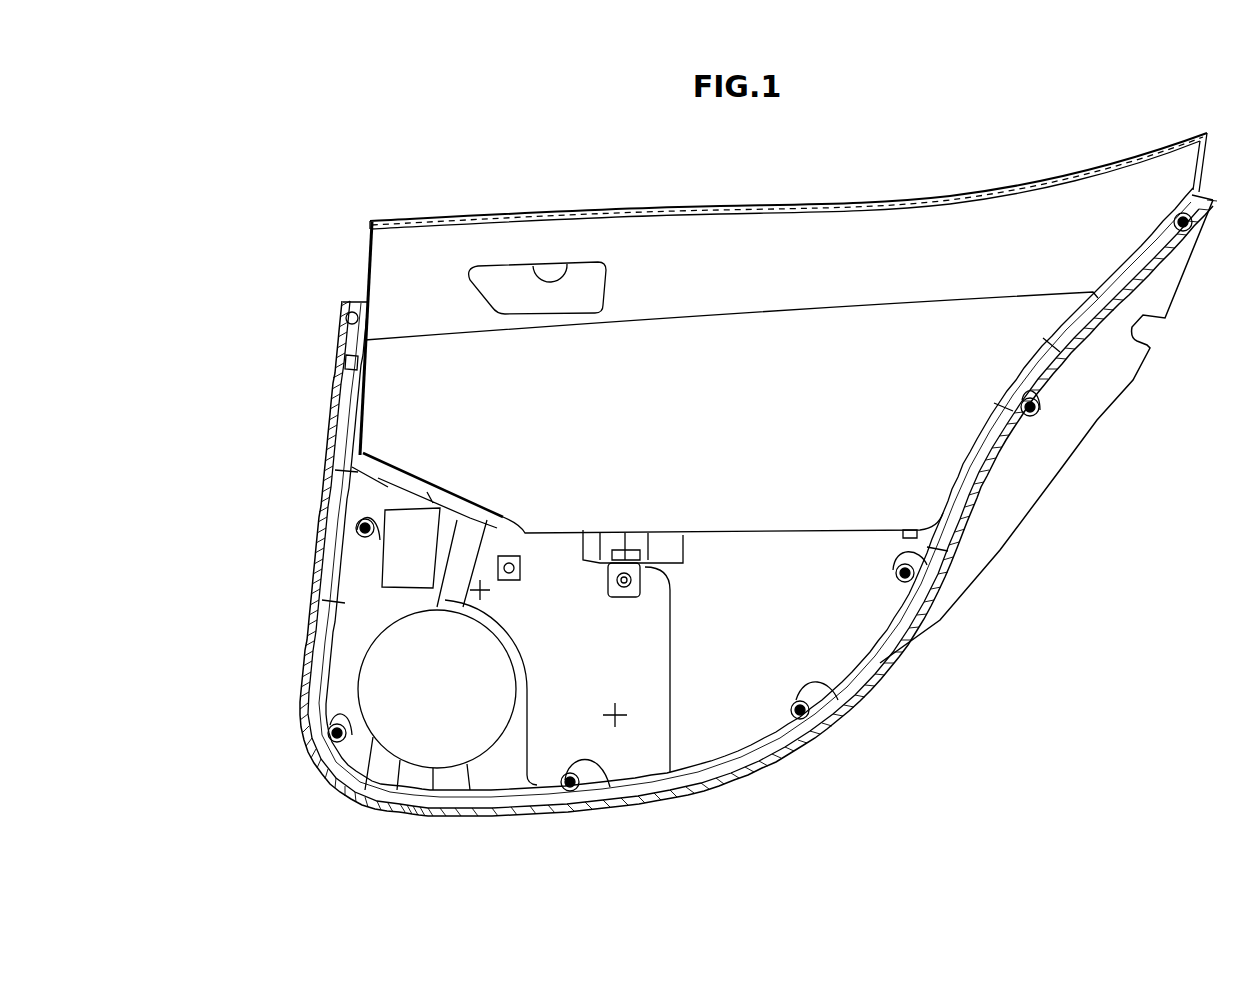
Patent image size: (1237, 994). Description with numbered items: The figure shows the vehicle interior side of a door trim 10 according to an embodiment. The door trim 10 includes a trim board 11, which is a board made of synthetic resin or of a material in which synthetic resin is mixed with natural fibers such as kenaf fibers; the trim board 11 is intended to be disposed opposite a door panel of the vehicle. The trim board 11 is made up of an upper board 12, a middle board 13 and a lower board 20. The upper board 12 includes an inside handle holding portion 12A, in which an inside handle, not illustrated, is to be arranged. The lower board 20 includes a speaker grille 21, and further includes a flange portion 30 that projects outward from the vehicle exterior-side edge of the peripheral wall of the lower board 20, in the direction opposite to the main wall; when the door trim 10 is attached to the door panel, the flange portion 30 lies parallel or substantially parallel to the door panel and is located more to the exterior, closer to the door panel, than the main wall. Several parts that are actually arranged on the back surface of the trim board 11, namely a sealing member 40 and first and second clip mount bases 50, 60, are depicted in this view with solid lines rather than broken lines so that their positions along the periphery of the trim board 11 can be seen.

The door trim 10 is at (338, 201).
The trim board 11 is at (245, 268).
The upper board 12 is at (395, 279).
The inside handle holding portion 12A is at (533, 266).
The middle board 13 is at (395, 375).
The lower board 20 is at (325, 475).
The speaker grille 21 is at (375, 672).
The flange portion 30 is at (357, 795).
The sealing member 40 is at (317, 673).
The first clip mount base 50 is at (323, 770).
The second clip mount base 60 is at (350, 547).